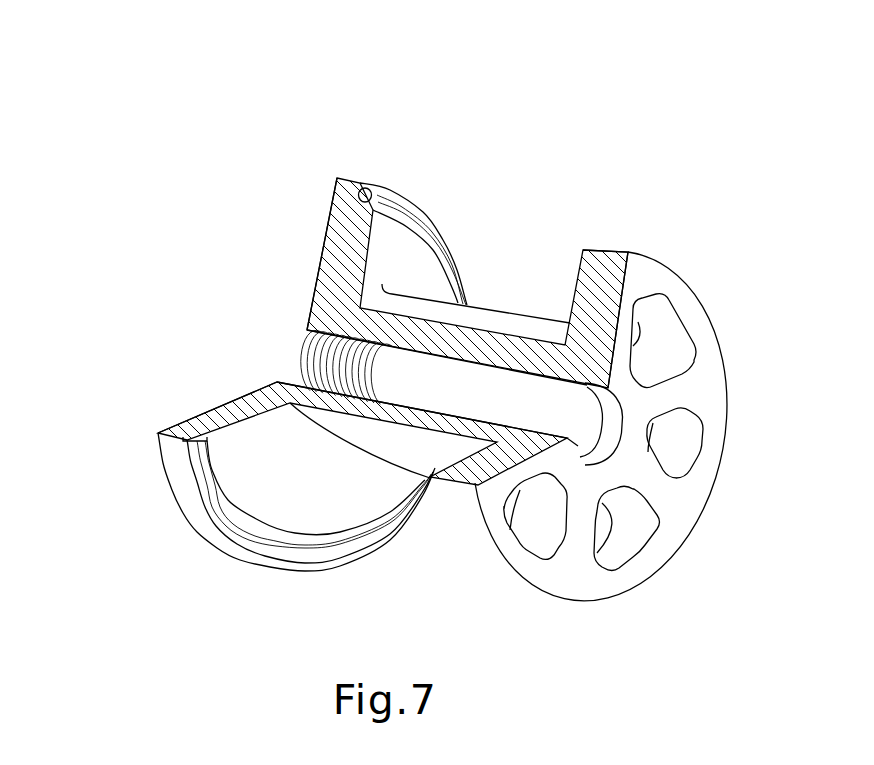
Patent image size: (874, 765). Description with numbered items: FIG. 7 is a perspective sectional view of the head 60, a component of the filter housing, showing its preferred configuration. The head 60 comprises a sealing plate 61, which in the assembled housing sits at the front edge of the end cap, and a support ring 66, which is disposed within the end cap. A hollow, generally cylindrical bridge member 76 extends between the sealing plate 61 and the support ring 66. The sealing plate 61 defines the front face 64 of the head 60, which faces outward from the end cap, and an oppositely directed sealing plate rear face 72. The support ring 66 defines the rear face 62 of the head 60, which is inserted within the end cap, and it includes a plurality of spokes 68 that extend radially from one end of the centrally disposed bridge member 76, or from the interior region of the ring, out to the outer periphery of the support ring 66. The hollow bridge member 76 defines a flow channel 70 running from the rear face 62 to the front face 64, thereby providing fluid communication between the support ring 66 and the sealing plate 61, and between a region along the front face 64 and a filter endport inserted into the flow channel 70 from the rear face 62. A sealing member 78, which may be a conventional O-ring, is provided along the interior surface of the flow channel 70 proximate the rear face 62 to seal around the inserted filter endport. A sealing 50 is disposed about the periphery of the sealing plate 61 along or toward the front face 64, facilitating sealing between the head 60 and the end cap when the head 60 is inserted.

The sealing 50 is at (380, 195).
The head 60 is at (806, 116).
The sealing plate 61 is at (342, 258).
The rear face 62 is at (712, 382).
The front face 64 is at (335, 214).
The support ring 66 is at (604, 250).
The spokes 68 is at (602, 285).
The flow channel 70 is at (492, 402).
The sealing plate rear face 72 is at (393, 272).
The bridge member 76 is at (488, 325).
The sealing member 78 is at (598, 432).